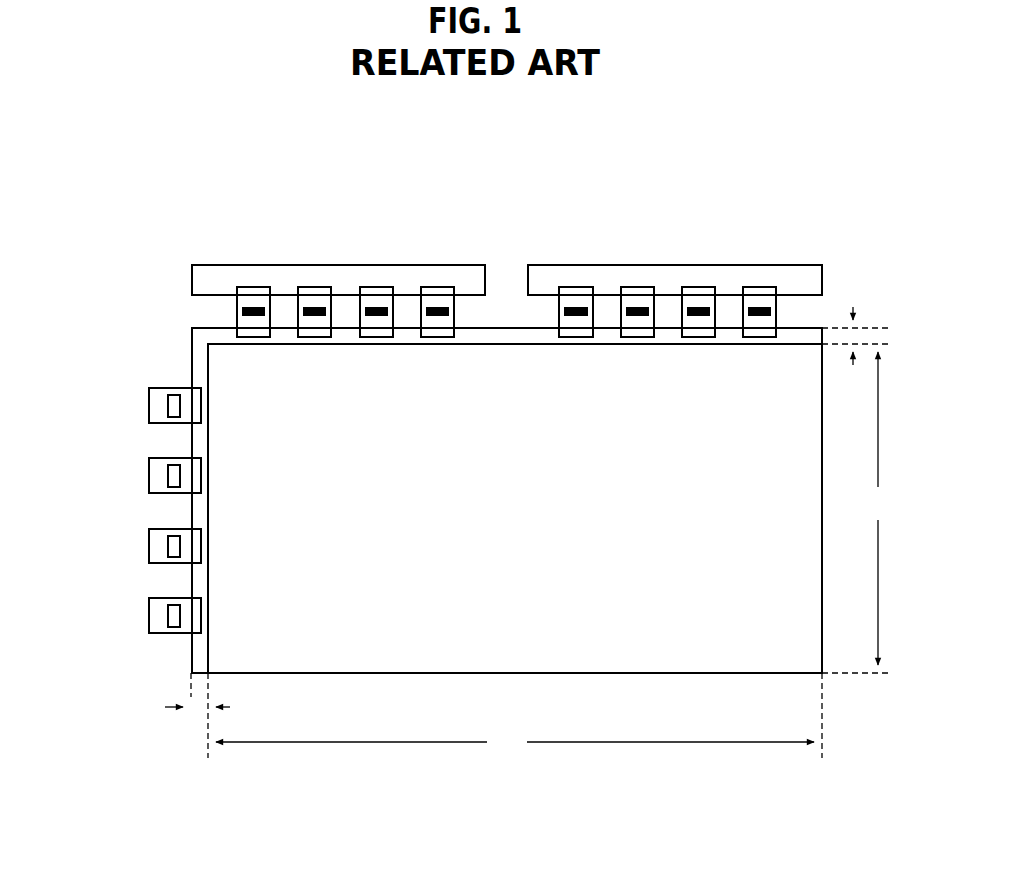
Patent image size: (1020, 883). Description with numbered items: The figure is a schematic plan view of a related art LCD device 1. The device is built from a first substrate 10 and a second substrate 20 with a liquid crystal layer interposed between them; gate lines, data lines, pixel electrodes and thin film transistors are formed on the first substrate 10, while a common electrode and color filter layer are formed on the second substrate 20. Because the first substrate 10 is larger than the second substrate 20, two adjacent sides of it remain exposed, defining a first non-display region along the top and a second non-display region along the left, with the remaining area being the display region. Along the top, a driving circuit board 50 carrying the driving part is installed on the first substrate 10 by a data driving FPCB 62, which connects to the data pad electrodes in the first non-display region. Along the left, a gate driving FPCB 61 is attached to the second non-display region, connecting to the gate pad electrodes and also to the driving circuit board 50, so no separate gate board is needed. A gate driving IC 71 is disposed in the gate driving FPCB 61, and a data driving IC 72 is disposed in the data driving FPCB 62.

The LCD device 1 is at (805, 175).
The first substrate 10 is at (180, 343).
The second substrate 20 is at (502, 332).
The driving circuit board 50 is at (388, 275).
The gate driving FPCB 61 is at (160, 405).
The data driving FPCB 62 is at (254, 303).
The gate driving IC 71 is at (175, 470).
The data driving IC 72 is at (315, 303).